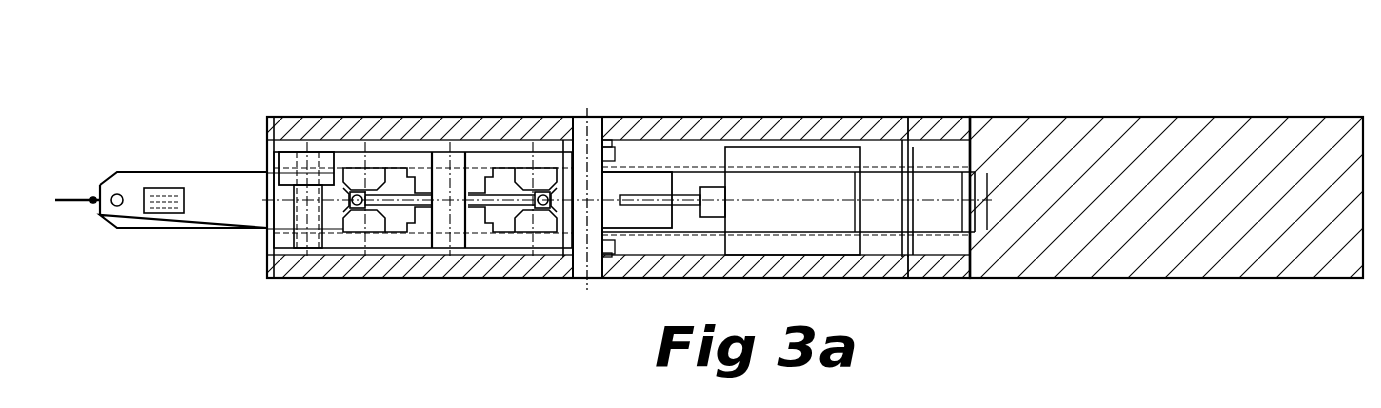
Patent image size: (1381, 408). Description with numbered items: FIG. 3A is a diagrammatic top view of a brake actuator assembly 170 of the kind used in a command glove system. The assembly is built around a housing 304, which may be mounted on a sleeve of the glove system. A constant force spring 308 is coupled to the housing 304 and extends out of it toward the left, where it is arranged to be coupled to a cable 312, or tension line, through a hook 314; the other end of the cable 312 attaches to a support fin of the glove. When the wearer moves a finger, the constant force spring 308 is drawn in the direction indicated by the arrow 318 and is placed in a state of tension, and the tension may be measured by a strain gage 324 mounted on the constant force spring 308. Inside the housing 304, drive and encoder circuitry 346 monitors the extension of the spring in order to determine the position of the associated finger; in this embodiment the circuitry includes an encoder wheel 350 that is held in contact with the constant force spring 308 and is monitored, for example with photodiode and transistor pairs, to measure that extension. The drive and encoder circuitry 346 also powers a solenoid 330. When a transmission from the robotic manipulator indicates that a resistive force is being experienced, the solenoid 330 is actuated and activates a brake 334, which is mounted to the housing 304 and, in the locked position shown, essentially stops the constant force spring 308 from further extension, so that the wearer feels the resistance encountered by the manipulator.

The brake actuator assembly 170 is at (1093, 62).
The housing 304 is at (1067, 279).
The constant force spring 308 is at (227, 215).
The cable 312 is at (70, 204).
The hook 314 is at (100, 190).
The arrow 318 is at (110, 339).
The strain gage 324 is at (168, 197).
The solenoid 330 is at (750, 213).
The brake 334 is at (633, 183).
The drive and encoder circuitry 346 is at (475, 215).
The encoder wheel 350 is at (360, 212).